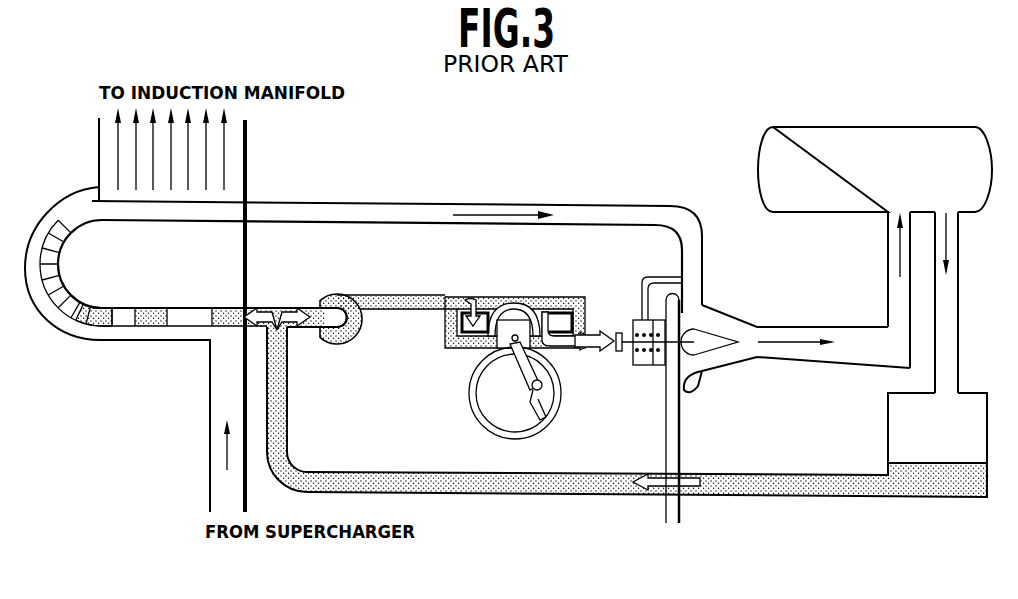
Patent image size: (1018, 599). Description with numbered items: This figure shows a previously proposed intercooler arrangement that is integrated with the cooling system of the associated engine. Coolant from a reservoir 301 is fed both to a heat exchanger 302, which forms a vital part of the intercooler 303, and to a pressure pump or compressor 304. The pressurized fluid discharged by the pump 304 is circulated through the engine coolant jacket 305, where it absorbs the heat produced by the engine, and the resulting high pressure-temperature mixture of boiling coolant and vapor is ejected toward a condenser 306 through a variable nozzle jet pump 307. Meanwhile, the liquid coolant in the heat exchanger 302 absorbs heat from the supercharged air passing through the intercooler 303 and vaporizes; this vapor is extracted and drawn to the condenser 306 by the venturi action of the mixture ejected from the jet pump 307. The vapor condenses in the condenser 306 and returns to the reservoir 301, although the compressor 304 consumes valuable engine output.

The reservoir 301 is at (888, 407).
The heat exchanger 302 is at (103, 285).
The intercooler 303 is at (90, 341).
The pressure pump 304 is at (353, 338).
The engine coolant jacket 305 is at (488, 300).
The condenser 306 is at (840, 127).
The variable nozzle jet pump 307 is at (737, 327).